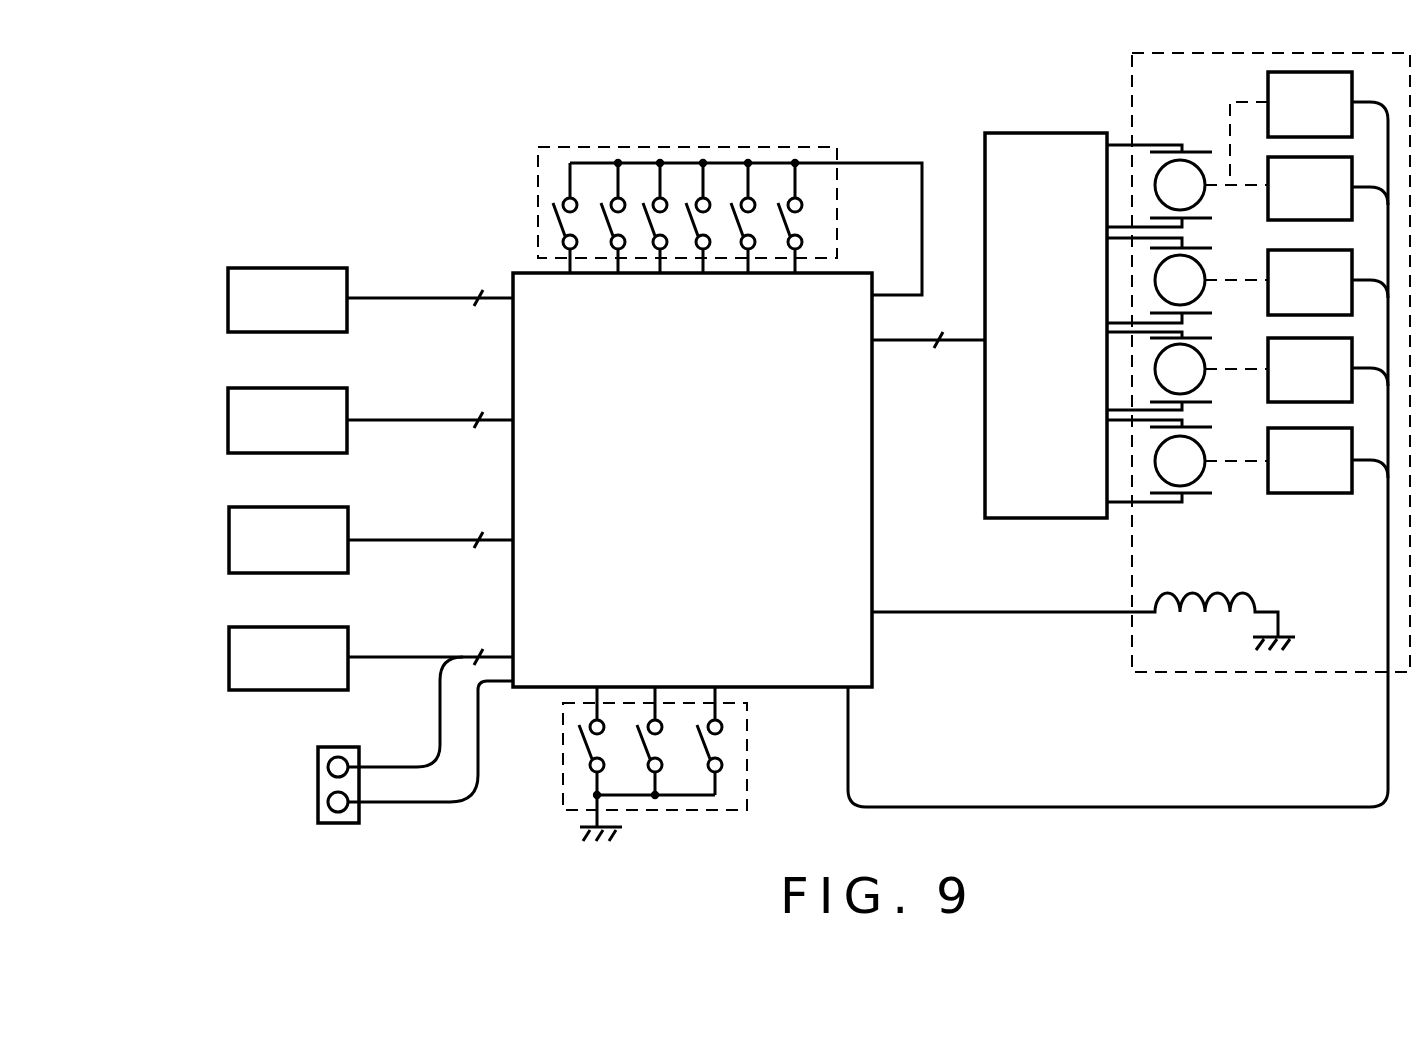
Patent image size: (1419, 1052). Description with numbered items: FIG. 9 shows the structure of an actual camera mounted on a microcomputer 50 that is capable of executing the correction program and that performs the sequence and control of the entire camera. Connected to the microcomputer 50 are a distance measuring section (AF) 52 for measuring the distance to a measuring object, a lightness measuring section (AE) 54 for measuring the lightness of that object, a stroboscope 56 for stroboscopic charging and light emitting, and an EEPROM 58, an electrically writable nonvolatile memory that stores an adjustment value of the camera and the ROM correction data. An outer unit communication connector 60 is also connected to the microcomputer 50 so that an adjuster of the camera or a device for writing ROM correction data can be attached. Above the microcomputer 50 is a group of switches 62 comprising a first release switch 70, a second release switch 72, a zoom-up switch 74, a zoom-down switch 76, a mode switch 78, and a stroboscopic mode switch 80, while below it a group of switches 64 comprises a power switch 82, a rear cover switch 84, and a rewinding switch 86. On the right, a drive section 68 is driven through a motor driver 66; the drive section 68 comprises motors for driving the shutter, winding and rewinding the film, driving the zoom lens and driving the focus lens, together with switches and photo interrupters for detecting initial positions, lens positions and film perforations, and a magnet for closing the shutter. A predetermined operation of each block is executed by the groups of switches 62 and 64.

The microcomputer 50 is at (873, 488).
The distance measuring section (AF) 52 is at (228, 297).
The lightness measuring section (AE) 54 is at (228, 417).
The stroboscope 56 is at (230, 537).
The EEPROM 58 is at (230, 655).
The outer unit communication connector 60 is at (334, 823).
The group of switches 62 is at (837, 213).
The group of switches 64 is at (659, 771).
The motor driver 66 is at (1043, 133).
The drive section 68 is at (1178, 672).
The first release switch 70 is at (699, 200).
The second release switch 72 is at (581, 183).
The zoom-up switch 74 is at (632, 183).
The zoom-down switch 76 is at (680, 183).
The mode switch 78 is at (729, 183).
The stroboscopic mode switch 80 is at (774, 183).
The power switch 82 is at (578, 765).
The rear cover switch 84 is at (646, 768).
The rewinding switch 86 is at (700, 766).